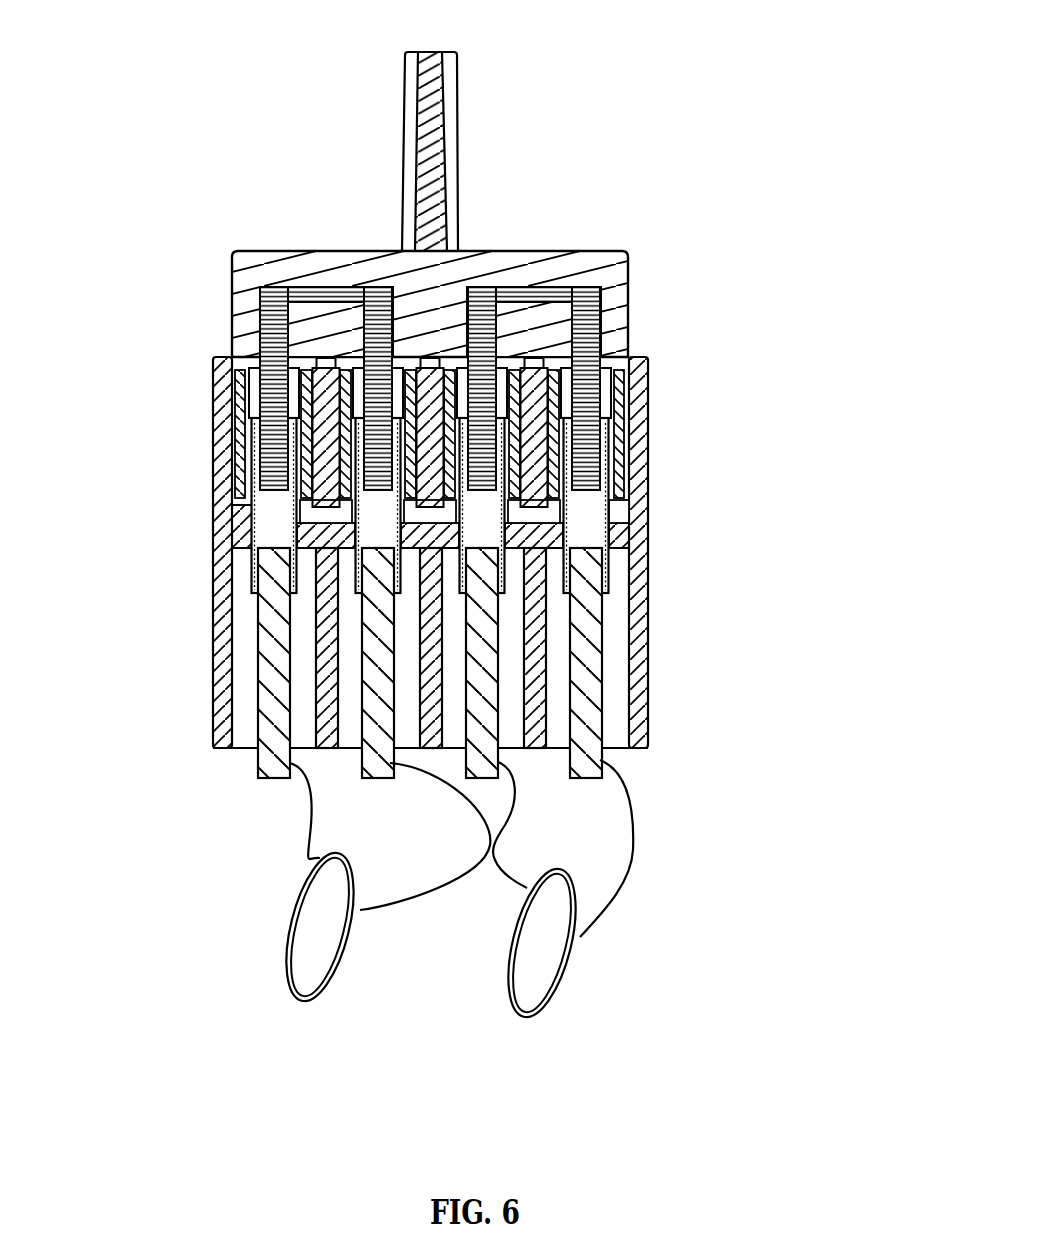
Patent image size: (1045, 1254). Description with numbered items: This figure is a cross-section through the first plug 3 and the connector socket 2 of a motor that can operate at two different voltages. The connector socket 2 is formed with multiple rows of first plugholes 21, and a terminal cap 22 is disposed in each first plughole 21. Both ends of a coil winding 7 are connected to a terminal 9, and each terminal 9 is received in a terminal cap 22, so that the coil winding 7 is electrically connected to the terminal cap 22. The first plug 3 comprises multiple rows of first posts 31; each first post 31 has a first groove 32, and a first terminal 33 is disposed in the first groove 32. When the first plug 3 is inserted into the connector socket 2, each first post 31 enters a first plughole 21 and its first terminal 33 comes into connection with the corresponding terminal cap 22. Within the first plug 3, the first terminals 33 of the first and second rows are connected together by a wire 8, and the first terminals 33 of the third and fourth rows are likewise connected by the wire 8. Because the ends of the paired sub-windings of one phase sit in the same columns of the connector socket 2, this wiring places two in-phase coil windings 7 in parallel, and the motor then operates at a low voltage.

The connector socket 2 is at (666, 704).
The first plug 3 is at (612, 239).
The coil winding 7 is at (591, 965).
The wire 8 is at (289, 274).
The terminal 9 is at (251, 633).
The first plughole 21 is at (651, 509).
The terminal cap 22 is at (628, 564).
The first post 31 is at (646, 421).
The first groove 32 is at (620, 386).
The first terminal 33 is at (612, 309).